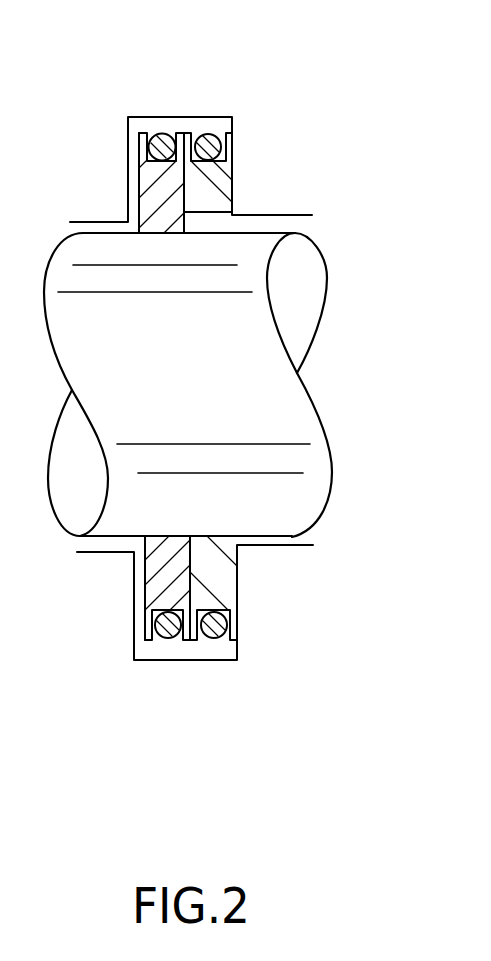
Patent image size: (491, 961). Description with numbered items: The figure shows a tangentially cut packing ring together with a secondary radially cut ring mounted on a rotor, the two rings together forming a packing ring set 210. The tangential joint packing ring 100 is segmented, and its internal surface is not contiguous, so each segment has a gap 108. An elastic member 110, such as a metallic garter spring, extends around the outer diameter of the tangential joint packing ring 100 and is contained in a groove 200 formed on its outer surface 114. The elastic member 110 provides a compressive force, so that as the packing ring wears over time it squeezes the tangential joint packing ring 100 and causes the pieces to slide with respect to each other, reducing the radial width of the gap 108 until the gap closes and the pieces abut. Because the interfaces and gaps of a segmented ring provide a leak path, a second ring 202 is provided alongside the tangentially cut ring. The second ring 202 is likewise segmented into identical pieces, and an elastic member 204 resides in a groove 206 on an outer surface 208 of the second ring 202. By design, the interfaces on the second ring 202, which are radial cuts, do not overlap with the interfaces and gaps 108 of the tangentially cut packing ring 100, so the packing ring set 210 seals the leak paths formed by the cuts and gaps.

The tangential joint packing ring 100 is at (222, 570).
The gap 108 is at (220, 212).
The elastic member 110 is at (214, 146).
The outer surface 114 is at (184, 133).
The groove 200 is at (213, 635).
The second ring 202 is at (139, 176).
The elastic member 204 is at (173, 145).
The groove 206 is at (157, 631).
The outer surface 208 is at (182, 637).
The packing ring set 210 is at (145, 586).